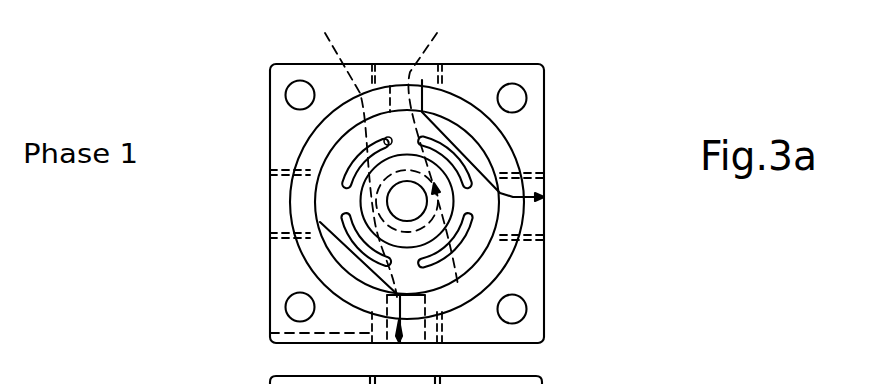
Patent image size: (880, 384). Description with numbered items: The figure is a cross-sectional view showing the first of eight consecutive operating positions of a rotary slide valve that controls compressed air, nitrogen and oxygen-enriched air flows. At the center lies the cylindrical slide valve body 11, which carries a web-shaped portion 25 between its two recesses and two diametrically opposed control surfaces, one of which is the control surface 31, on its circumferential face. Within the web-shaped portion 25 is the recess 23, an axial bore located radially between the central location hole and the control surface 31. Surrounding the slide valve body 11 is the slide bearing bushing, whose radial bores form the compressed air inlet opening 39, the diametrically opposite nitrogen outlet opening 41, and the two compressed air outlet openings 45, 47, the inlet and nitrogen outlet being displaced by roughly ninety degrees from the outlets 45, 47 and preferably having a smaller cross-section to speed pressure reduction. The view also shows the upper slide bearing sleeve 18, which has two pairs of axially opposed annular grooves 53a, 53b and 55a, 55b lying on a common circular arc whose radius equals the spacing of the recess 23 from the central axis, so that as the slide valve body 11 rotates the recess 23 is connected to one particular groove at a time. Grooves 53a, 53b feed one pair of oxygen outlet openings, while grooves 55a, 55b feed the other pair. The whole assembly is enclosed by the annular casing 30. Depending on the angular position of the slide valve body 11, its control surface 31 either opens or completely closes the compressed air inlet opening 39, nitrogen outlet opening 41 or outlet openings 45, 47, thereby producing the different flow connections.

The slide valve body 11 is at (478, 160).
The upper slide bearing sleeve 18 is at (328, 190).
The recess 23 is at (386, 137).
The web-shaped portion 25 is at (375, 175).
The annular casing 30 is at (533, 325).
The control surface 31 is at (445, 380).
The compressed air inlet opening 39 is at (476, 146).
The nitrogen outlet opening 41 is at (270, 334).
The compressed air outlet opening 45 is at (280, 207).
The compressed air outlet opening 47 is at (546, 221).
The groove 53a is at (445, 147).
The groove 53b is at (352, 245).
The groove 55a is at (348, 170).
The groove 55b is at (455, 242).